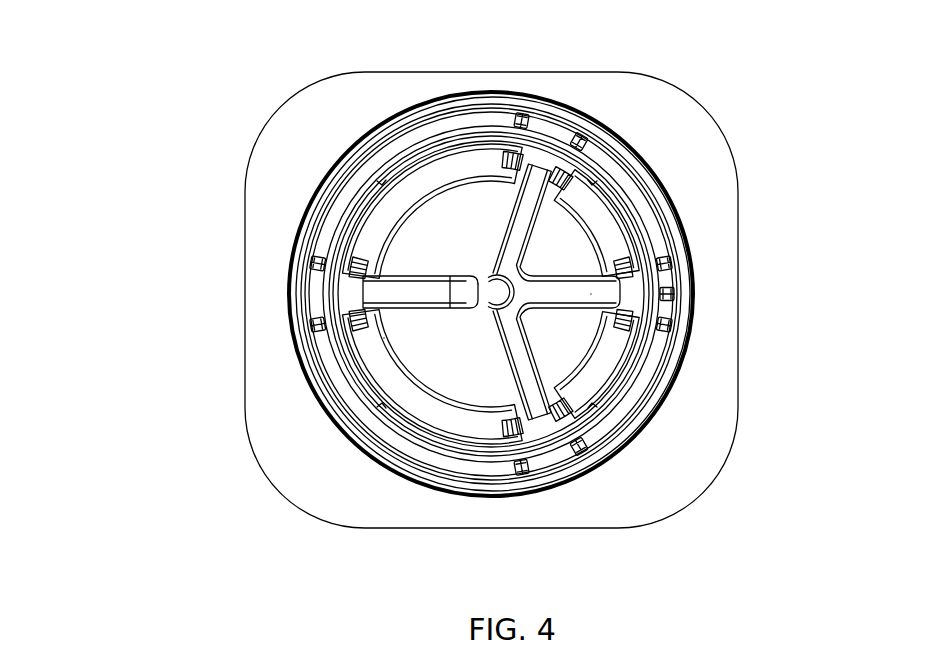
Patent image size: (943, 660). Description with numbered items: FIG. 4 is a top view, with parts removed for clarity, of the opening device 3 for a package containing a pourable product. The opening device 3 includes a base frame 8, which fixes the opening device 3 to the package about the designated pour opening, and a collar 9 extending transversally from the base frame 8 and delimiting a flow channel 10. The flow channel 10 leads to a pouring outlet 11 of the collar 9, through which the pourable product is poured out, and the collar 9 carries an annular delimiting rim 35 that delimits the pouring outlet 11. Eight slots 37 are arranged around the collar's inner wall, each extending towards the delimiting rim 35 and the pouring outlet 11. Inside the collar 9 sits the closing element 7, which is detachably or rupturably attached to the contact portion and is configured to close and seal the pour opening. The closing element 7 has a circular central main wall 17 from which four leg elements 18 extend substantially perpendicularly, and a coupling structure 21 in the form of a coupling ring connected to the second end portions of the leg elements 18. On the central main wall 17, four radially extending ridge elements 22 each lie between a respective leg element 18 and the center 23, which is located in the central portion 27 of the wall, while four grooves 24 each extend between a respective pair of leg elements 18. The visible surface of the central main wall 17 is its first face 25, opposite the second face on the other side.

The opening device 3 is at (137, 142).
The closing element 7 is at (440, 197).
The base frame 8 is at (673, 123).
The collar 9 is at (317, 158).
The flow channel 10 is at (465, 127).
The pouring outlet 11 is at (670, 290).
The central main wall 17 is at (560, 217).
The leg elements 18 is at (362, 293).
The coupling structure 21 is at (590, 405).
The ridge elements 22 is at (518, 233).
The center 23 is at (486, 305).
The grooves 24 is at (377, 240).
The first face 25 is at (410, 338).
The central portion 27 is at (485, 283).
The delimiting rim 35 is at (312, 262).
The slots 37 is at (584, 133).